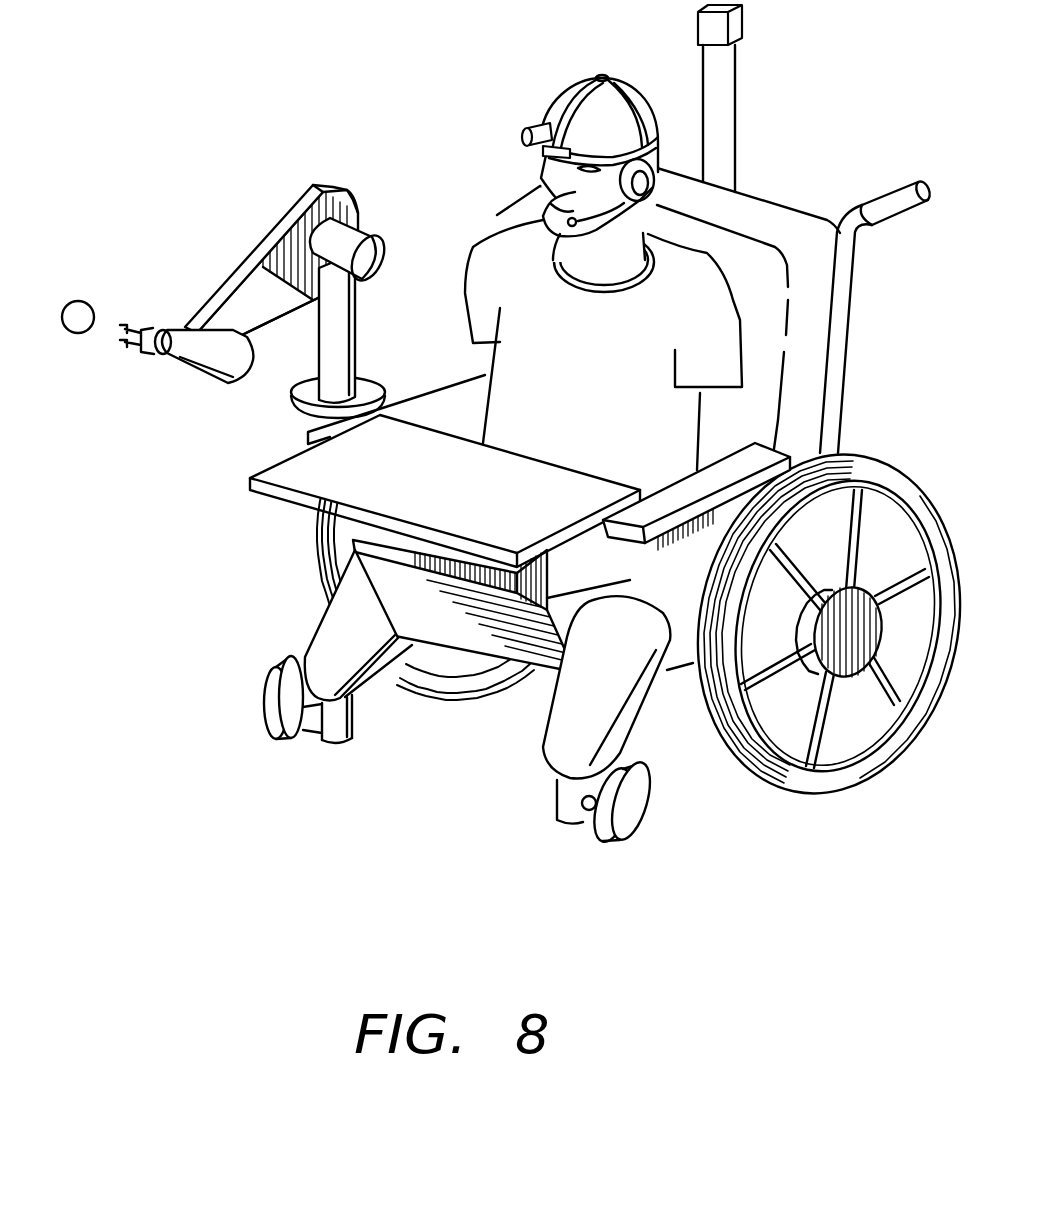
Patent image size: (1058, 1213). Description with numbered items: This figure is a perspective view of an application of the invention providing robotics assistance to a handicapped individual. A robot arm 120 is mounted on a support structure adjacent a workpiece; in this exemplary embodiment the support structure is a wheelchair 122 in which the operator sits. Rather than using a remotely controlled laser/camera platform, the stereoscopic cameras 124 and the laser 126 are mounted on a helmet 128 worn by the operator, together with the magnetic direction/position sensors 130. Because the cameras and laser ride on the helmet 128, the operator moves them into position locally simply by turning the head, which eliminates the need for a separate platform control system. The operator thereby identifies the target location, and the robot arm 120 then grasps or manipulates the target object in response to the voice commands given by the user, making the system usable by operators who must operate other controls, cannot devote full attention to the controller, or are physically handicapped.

The robot arm 120 is at (242, 270).
The wheelchair 122 is at (320, 562).
The stereoscopic cameras 124 is at (528, 131).
The laser 126 is at (541, 154).
The helmet 128 is at (632, 107).
The magnetic direction/position sensors 130 is at (602, 74).